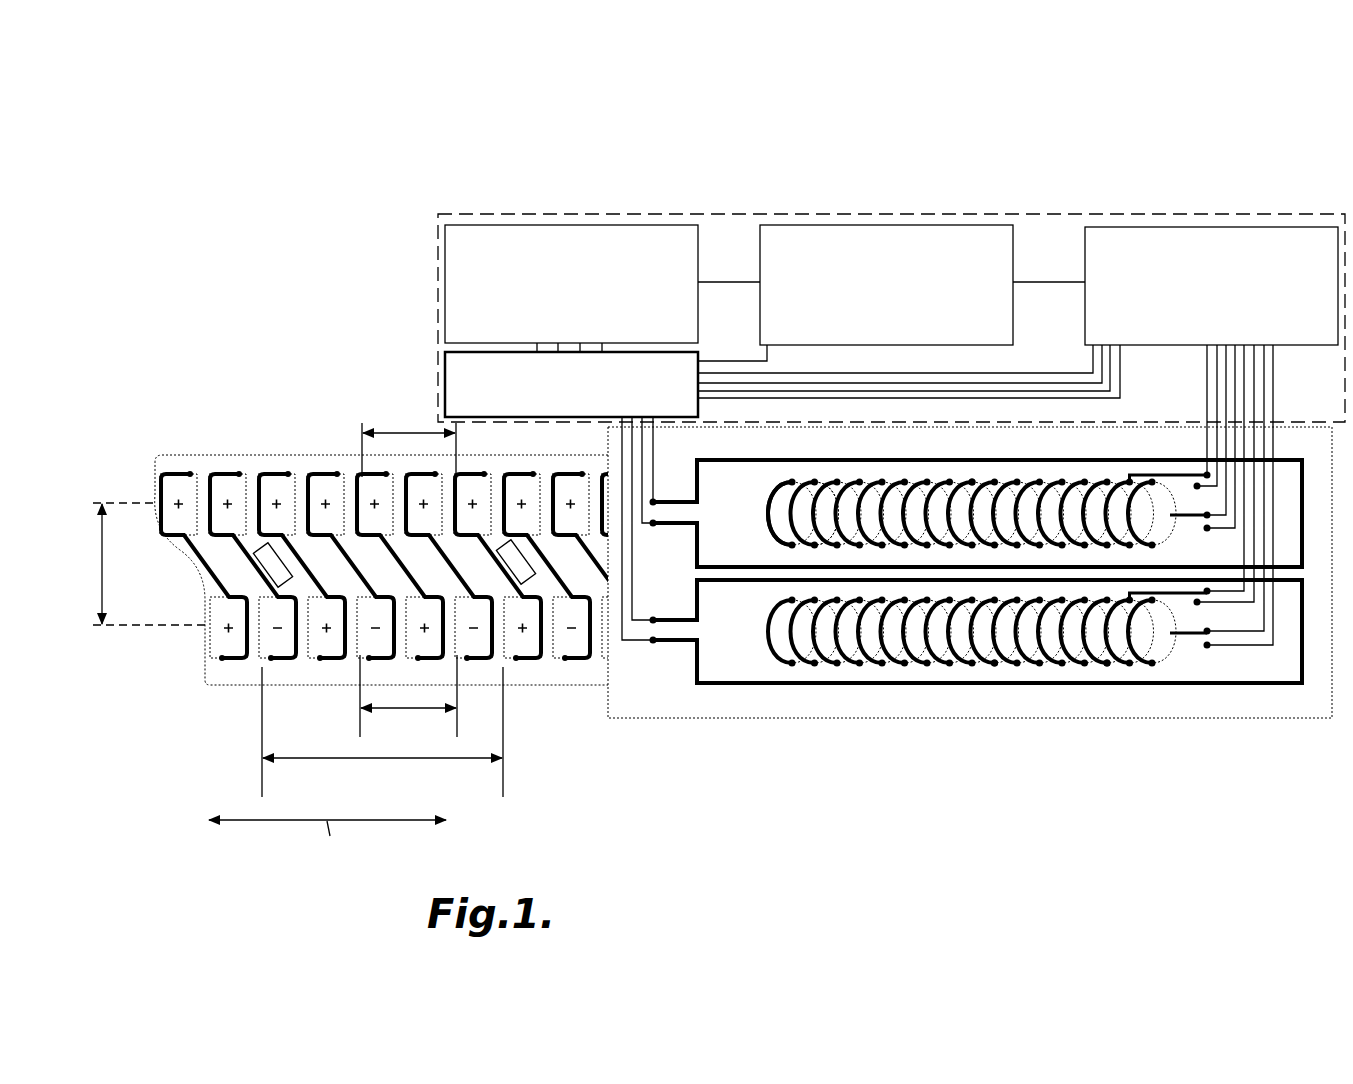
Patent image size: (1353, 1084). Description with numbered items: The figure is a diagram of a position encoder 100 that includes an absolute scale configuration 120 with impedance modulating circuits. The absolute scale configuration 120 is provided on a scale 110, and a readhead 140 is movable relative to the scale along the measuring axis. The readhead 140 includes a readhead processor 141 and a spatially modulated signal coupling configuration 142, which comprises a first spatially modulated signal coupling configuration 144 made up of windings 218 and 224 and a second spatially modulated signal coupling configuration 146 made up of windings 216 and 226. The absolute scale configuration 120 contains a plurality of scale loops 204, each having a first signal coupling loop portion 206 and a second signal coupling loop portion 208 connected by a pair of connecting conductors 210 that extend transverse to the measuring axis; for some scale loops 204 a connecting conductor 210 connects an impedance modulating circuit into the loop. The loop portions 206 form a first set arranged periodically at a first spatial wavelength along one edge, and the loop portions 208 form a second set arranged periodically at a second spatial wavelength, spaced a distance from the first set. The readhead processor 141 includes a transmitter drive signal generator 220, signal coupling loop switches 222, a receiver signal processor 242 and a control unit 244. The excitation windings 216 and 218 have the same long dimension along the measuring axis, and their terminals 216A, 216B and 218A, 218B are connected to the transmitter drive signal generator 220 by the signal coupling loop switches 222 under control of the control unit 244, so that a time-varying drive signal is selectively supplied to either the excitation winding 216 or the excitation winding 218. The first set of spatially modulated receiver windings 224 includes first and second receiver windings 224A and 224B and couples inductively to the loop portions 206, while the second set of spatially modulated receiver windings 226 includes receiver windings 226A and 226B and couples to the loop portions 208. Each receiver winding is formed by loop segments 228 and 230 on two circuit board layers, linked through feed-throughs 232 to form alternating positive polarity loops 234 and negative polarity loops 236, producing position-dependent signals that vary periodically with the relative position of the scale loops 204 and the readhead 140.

The position encoder 100 is at (1253, 134).
The scale 110 is at (131, 389).
The absolute scale configuration 120 is at (150, 441).
The readhead 140 is at (1053, 776).
The readhead processor 141 is at (855, 216).
The spatially modulated signal coupling configuration 142 is at (612, 805).
The first spatially modulated signal coupling configuration 144 is at (666, 785).
The second spatially modulated signal coupling configuration 146 is at (669, 895).
The scale loop 204 is at (184, 546).
The first signal coupling loop portion 206 is at (216, 471).
The second signal coupling loop portion 208 is at (318, 662).
The connecting conductor 210 is at (283, 566).
The excitation winding 216 is at (757, 569).
The terminal 216A is at (655, 497).
The terminal 216B is at (653, 527).
The excitation winding 218 is at (746, 583).
The terminal 218A is at (653, 617).
The terminal 218B is at (653, 646).
The transmitter drive signal generator 220 is at (571, 284).
The signal coupling loop switches 222 is at (444, 387).
The first set of spatially modulated receiver windings 224 is at (738, 540).
The first receiver winding 224A is at (1197, 531).
The second receiver winding 224B is at (1180, 474).
The second set of spatially modulated receiver windings 226 is at (766, 662).
The first receiver winding 226A is at (1198, 648).
The second receiver winding 226B is at (1198, 605).
The loop segment 228 is at (998, 665).
The loop segment 230 is at (1115, 665).
The feed-through 232 is at (972, 472).
The positive polarity loop 234 is at (770, 513).
The negative polarity loop 236 is at (838, 462).
The receiver signal processor 242 is at (1211, 286).
The control unit 244 is at (886, 285).